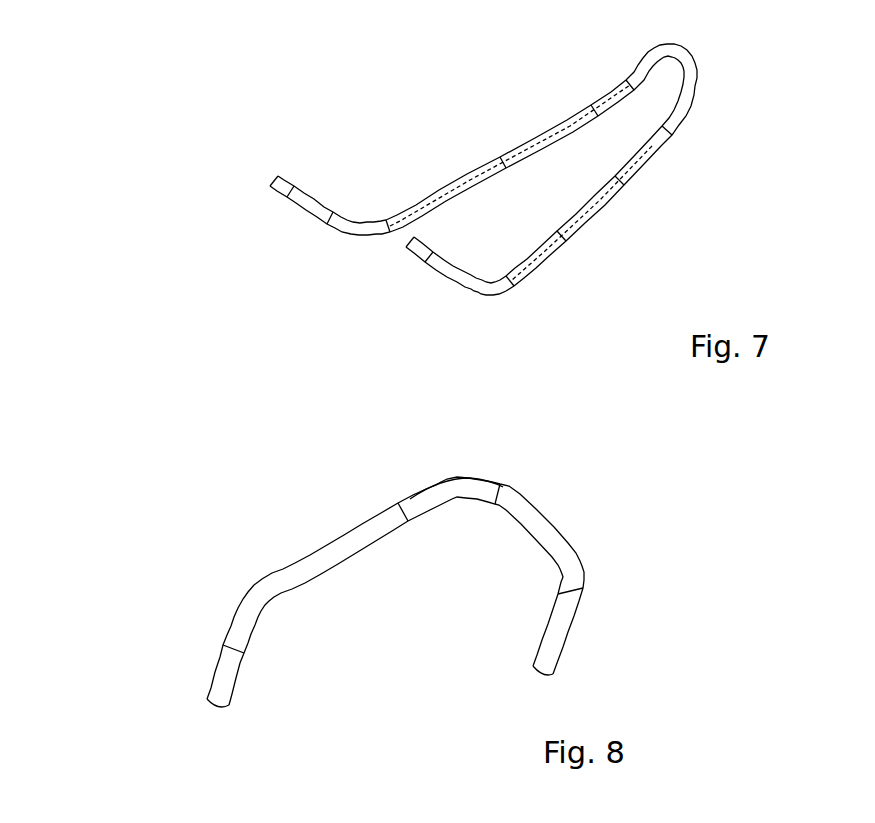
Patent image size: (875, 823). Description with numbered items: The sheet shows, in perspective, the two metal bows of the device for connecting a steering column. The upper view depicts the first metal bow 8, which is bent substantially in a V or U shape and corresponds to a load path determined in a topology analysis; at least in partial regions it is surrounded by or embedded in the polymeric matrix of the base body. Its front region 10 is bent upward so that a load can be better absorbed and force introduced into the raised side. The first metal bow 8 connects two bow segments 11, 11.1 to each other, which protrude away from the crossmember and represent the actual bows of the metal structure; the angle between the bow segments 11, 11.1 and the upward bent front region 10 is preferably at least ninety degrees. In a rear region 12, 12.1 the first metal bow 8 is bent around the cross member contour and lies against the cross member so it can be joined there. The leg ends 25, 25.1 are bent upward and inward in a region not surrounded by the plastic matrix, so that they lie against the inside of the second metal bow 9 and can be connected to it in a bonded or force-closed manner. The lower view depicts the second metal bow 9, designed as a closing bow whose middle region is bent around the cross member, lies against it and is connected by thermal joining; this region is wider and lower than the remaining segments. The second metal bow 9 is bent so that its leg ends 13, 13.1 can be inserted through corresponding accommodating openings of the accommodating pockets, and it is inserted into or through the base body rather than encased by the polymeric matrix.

In FIG. 7, the first metal bow 8 is at (744, 97).
In FIG. 7, the front region 10 is at (623, 70).
In FIG. 7, the bow segment 11 is at (605, 202).
In FIG. 7, the bow segment 11.1 is at (477, 175).
In FIG. 7, the rear region 12 is at (443, 288).
In FIG. 7, the rear region 12.1 is at (313, 228).
In FIG. 7, the leg end 25 is at (428, 238).
In FIG. 7, the leg end 25.1 is at (280, 173).
In FIG. 8, the second metal bow 9 is at (547, 492).
In FIG. 8, the leg end 13 is at (583, 611).
In FIG. 8, the leg end 13.1 is at (225, 632).